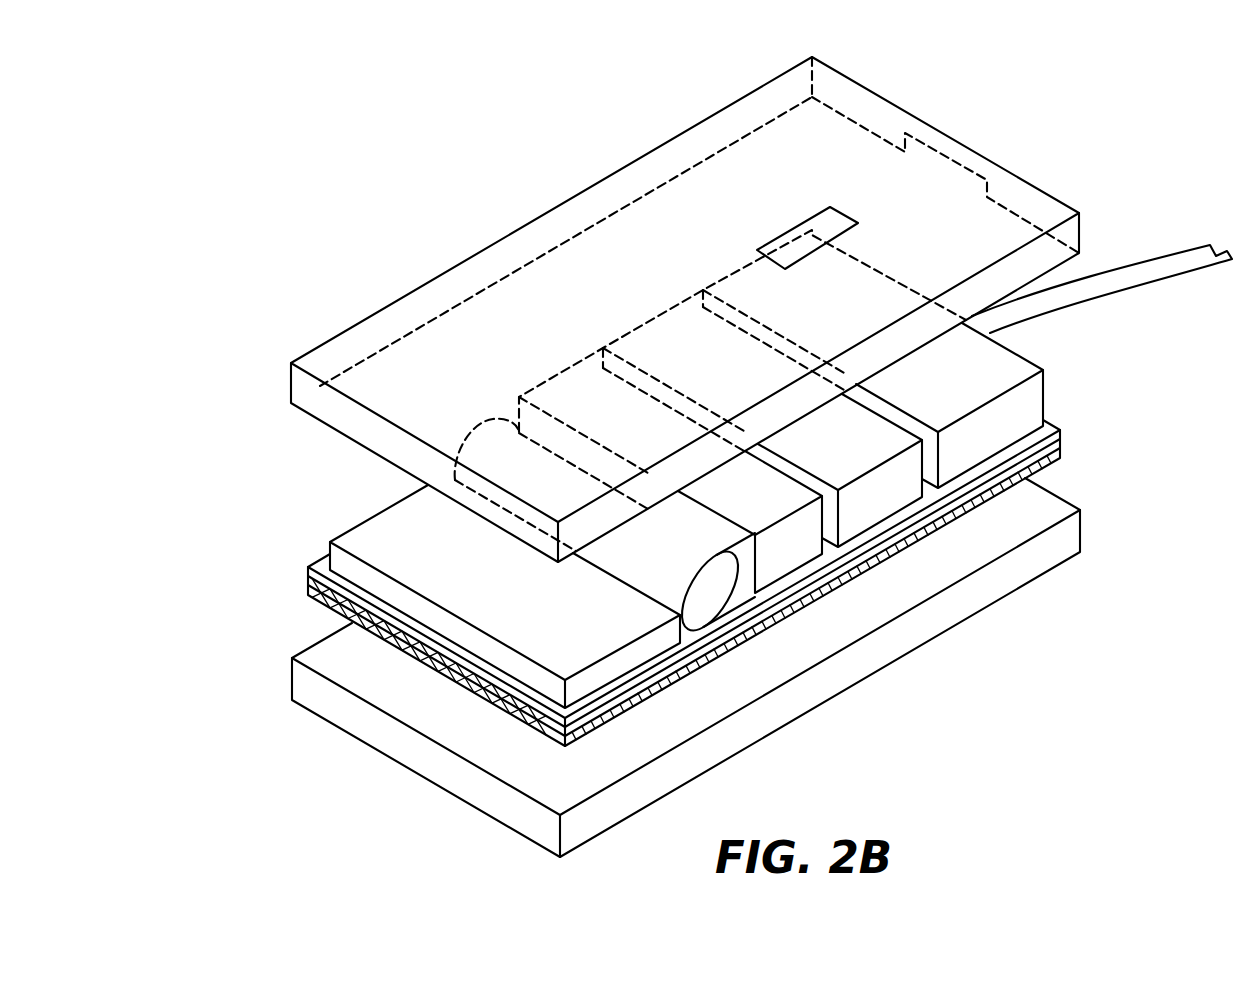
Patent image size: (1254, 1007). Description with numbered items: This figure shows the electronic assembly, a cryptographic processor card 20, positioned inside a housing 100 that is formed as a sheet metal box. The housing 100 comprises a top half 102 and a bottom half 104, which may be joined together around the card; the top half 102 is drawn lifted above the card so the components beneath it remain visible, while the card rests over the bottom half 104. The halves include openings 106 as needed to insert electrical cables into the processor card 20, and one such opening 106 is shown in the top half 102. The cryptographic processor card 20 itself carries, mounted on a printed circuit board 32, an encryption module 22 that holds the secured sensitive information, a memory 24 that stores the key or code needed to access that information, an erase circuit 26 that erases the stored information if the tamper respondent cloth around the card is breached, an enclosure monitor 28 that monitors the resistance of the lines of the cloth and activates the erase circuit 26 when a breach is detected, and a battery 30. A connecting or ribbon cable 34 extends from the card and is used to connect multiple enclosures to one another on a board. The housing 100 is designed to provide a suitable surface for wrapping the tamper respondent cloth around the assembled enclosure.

The housing 100 is at (1033, 67).
The top half 102 is at (1017, 190).
The bottom half 104 is at (988, 582).
The opening 106 is at (812, 240).
The cryptographic processor card 20 is at (295, 548).
The encryption module 22 is at (1000, 437).
The memory 24 is at (890, 502).
The erase circuit 26 is at (798, 555).
The enclosure monitor 28 is at (638, 652).
The battery 30 is at (713, 605).
The printed circuit board 32 is at (592, 700).
The ribbon cable 34 is at (1117, 288).